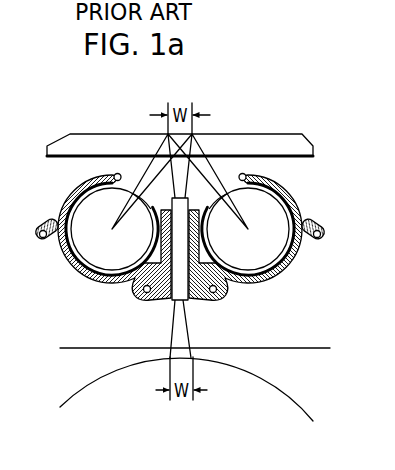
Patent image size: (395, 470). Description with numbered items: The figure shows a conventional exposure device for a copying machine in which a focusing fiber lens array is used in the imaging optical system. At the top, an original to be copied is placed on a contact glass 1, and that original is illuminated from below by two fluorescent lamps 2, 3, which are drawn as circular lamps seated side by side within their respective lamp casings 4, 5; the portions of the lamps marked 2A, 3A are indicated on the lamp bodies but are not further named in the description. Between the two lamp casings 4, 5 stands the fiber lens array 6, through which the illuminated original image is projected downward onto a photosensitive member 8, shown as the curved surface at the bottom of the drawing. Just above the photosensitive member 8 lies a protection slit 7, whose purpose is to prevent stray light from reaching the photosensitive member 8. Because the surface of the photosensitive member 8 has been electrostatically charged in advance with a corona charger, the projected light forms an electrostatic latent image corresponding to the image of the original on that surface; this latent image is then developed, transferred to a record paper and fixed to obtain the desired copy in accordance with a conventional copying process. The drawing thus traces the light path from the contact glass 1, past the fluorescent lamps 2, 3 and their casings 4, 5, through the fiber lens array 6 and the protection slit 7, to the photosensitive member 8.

The contact glass 1 is at (283, 142).
The fluorescent lamp 2 is at (90, 205).
The light emitting portion of first lamp 2A is at (131, 196).
The fluorescent lamp 3 is at (277, 212).
The light emitting portion of second lamp 3A is at (223, 197).
The lamp casing 4 is at (68, 267).
The lamp casing 5 is at (297, 270).
The fiber lens array 6 is at (173, 300).
The protection slit 7 is at (281, 348).
The photosensitive member 8 is at (294, 398).